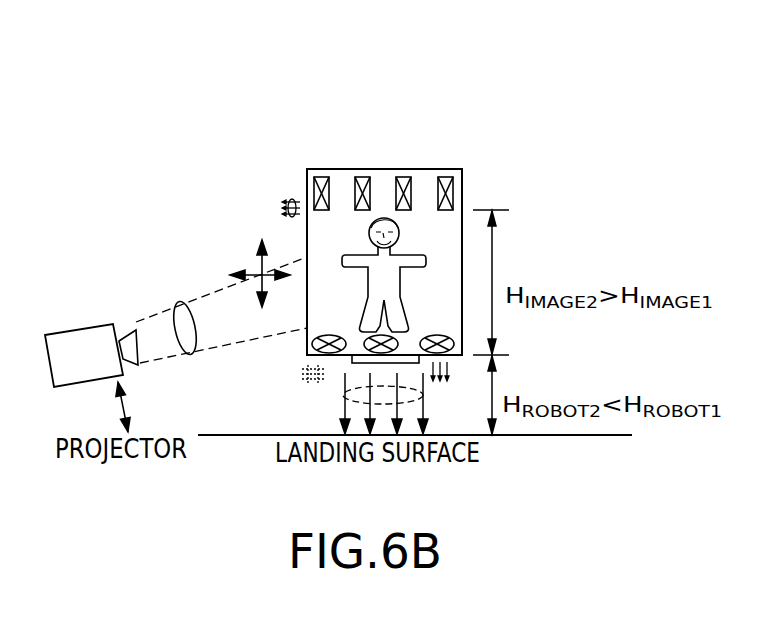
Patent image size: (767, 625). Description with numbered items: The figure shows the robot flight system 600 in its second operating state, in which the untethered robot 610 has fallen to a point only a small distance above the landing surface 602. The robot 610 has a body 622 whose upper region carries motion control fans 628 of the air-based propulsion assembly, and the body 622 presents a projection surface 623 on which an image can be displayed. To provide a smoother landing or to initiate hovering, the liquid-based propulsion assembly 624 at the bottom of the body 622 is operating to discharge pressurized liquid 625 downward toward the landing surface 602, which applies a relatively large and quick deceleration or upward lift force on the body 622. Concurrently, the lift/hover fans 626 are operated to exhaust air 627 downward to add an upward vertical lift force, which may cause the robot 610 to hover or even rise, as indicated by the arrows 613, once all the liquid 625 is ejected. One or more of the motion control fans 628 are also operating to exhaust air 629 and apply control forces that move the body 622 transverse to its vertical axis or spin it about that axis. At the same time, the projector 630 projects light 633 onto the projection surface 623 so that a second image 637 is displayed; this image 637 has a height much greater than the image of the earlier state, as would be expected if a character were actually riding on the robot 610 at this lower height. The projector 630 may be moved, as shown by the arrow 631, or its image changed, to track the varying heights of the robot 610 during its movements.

The robot flight system 600 is at (263, 88).
The robot 610 is at (500, 126).
The motion control fans 628 is at (362, 177).
The body 622 is at (404, 177).
The projection surface 623 is at (462, 183).
The air exhausted by motion control fans 629 is at (291, 199).
The second image 637 is at (340, 231).
The movement arrows 613 is at (255, 274).
The light 633 is at (182, 303).
The projector 630 is at (77, 333).
The projector movement arrow 631 is at (131, 393).
The lift/hover fans 626 is at (308, 343).
The air exhausted by lift/hover fans 627 is at (300, 373).
The liquid-based propulsion assembly 624 is at (346, 373).
The pressurized liquid 625 is at (425, 390).
The landing surface 602 is at (575, 437).